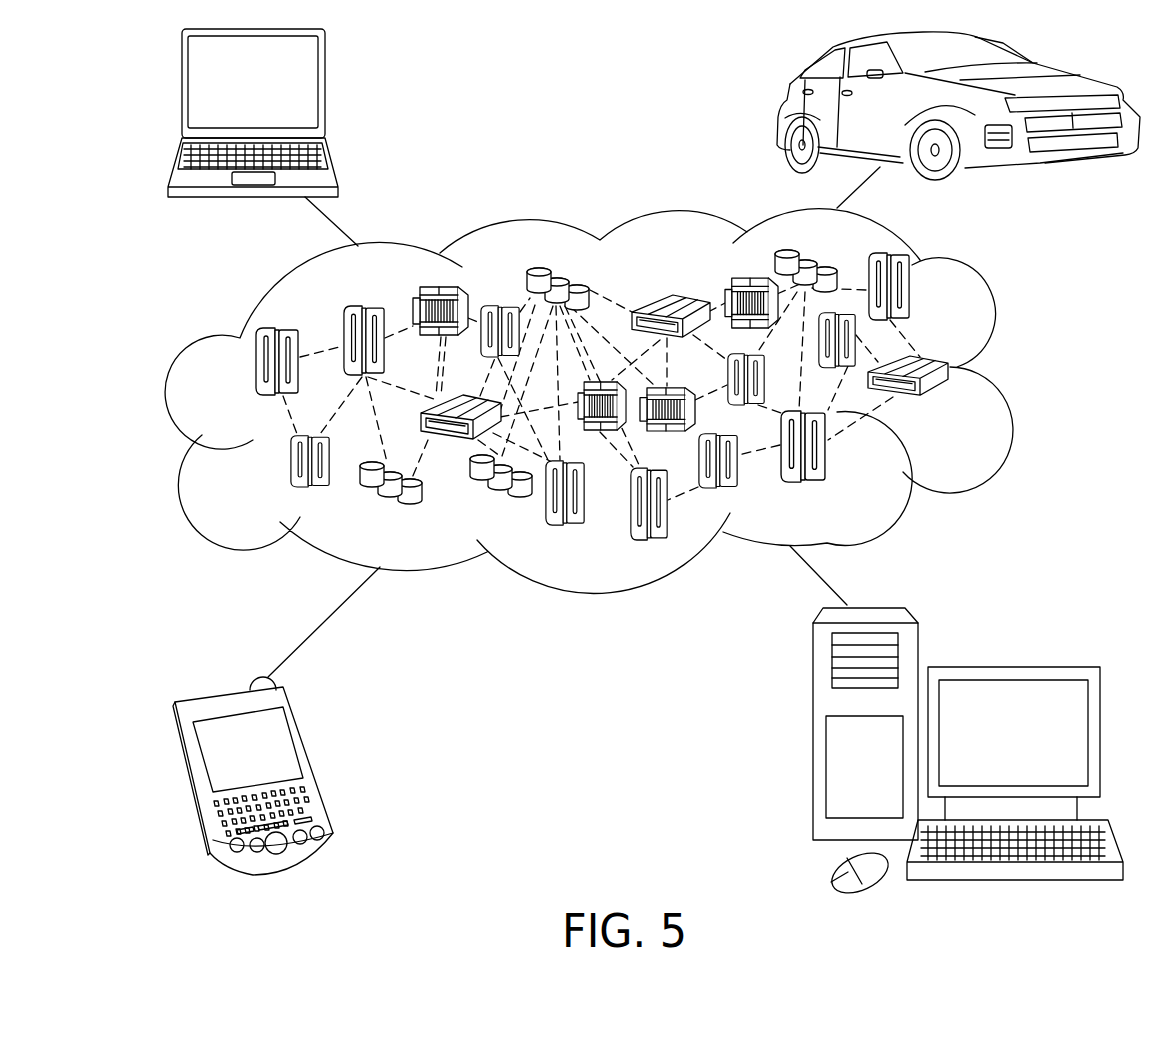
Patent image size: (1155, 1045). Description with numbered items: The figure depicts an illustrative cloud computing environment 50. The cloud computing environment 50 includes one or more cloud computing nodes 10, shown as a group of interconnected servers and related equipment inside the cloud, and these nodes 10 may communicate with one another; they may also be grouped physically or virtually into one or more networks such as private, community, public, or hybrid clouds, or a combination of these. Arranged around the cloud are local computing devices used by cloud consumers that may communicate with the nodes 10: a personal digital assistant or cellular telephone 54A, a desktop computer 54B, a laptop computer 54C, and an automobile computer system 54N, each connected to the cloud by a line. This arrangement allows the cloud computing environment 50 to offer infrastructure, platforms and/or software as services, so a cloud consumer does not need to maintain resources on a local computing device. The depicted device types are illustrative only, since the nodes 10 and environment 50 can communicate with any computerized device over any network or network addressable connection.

The cloud computing nodes 10 is at (953, 404).
The cloud computing environment 50 is at (1012, 377).
The personal digital assistant (PDA) or cellular telephone 54A is at (315, 765).
The desktop computer 54B is at (1012, 667).
The laptop computer 54C is at (328, 95).
The automobile computer system 54N is at (786, 110).